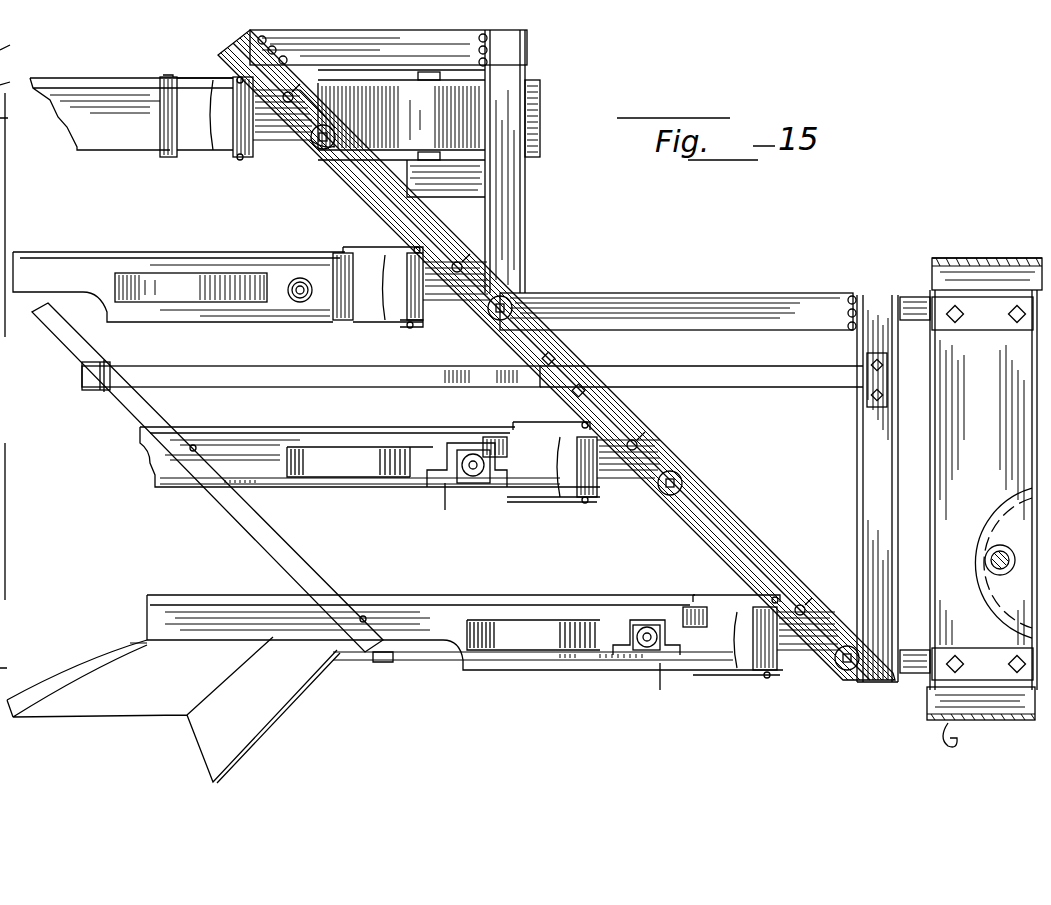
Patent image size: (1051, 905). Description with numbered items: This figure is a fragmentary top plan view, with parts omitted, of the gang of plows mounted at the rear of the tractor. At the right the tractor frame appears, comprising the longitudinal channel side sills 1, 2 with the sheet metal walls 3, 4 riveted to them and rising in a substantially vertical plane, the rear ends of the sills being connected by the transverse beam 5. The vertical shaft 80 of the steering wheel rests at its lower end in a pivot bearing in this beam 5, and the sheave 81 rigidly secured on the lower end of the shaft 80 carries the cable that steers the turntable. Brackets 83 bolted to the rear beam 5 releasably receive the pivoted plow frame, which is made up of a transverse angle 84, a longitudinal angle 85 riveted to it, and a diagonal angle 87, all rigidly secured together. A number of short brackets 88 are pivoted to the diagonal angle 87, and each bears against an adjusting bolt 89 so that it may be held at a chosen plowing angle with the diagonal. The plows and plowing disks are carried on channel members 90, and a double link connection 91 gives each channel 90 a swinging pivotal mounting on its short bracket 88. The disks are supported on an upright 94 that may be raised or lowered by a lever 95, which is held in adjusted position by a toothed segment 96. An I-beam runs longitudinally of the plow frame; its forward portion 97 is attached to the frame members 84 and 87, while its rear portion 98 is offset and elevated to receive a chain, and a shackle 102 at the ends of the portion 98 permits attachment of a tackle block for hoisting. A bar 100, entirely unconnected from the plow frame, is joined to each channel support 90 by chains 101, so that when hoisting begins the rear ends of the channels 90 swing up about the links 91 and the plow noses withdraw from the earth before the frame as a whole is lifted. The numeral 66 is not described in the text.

The longitudinal channel side sill 1 is at (928, 707).
The longitudinal channel side sill 2 is at (932, 272).
The sheet metal wall 3 is at (954, 737).
The sheet metal wall 4 is at (988, 262).
The transverse beam 5 is at (987, 438).
The post 66 is at (512, 161).
The vertical shaft 80 is at (1003, 568).
The sheave 81 is at (996, 547).
The brackets 83 is at (982, 488).
The transverse angle 84 is at (877, 542).
The longitudinal angle 85 is at (678, 311).
The diagonal angle 87 is at (790, 568).
The short brackets 88 is at (473, 300).
The adjusting bolt 89 is at (462, 250).
The channel members 90 is at (140, 132).
The double link connection 91 is at (215, 150).
The upright 94 is at (475, 478).
The lever 95 is at (350, 485).
The toothed segment 96 is at (474, 396).
The forward portion of I-beam 97 is at (701, 379).
The offset elevated portion of I-beam 98 is at (311, 379).
The bar 100 is at (270, 540).
The chains 101 is at (193, 445).
The shackle 102 is at (100, 388).